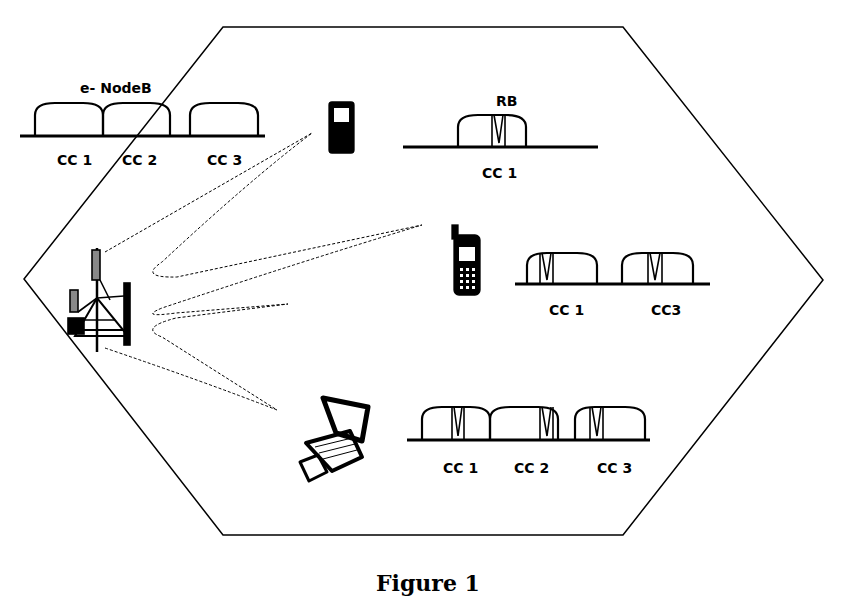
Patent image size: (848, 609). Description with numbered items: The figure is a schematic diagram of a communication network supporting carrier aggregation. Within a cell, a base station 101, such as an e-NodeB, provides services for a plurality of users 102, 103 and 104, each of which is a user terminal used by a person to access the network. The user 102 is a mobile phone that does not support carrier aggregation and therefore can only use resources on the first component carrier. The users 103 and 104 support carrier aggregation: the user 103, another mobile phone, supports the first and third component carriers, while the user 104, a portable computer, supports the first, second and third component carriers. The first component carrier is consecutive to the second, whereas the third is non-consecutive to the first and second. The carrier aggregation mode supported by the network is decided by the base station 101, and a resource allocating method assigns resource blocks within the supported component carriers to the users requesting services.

The base station 101 is at (71, 310).
The user 102 is at (384, 115).
The user 103 is at (516, 262).
The user 104 is at (377, 432).